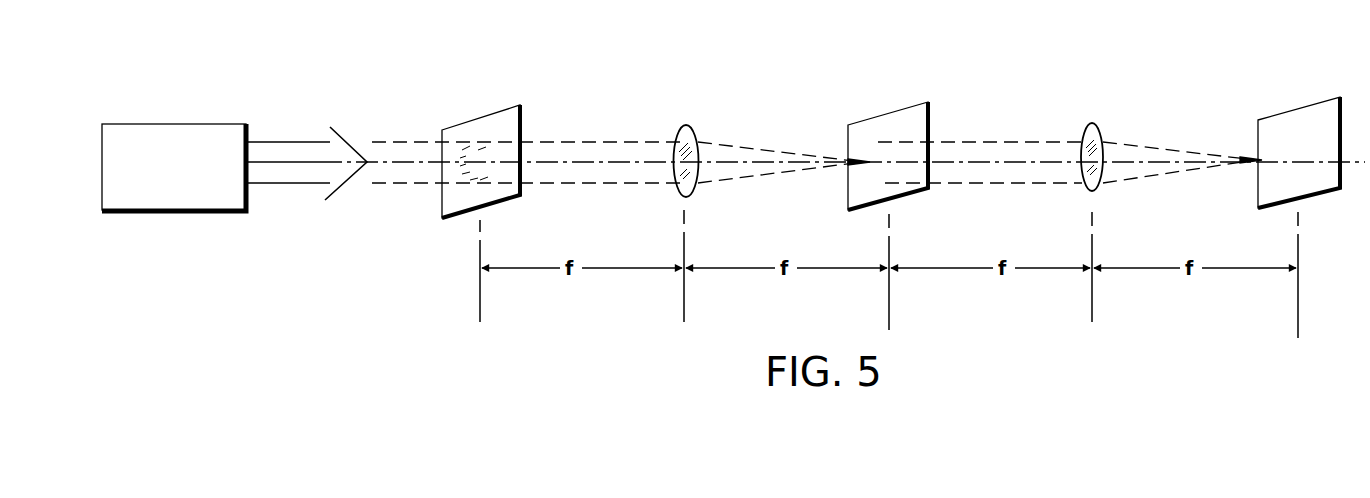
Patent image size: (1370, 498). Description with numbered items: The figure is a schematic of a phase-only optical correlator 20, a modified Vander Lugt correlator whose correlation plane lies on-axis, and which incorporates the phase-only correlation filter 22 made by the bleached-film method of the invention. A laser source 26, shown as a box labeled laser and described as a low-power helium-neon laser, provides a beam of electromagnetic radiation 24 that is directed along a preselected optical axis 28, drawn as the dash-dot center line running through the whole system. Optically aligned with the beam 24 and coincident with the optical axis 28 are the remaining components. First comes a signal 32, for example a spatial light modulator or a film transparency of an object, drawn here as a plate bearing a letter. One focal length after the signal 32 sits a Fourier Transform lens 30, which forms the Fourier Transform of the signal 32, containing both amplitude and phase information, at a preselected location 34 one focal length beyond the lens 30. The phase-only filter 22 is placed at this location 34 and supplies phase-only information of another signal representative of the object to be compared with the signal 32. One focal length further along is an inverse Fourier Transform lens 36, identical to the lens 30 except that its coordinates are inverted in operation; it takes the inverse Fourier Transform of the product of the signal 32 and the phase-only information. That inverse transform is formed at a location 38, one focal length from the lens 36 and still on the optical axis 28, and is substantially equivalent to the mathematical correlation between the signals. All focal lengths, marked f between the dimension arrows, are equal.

The phase-only optical correlator 20 is at (624, 80).
The phase-only correlation filter 22 is at (895, 110).
The beam of electromagnetic radiation 24 is at (276, 153).
The laser source 26 is at (162, 213).
The optical axis 28 is at (382, 162).
The Fourier Transform lens 30 is at (686, 124).
The signal 32 is at (478, 142).
The preselected location 34 is at (866, 138).
The inverse Fourier Transform lens 36 is at (1100, 122).
The location of inverse Fourier Transform 38 is at (1296, 126).